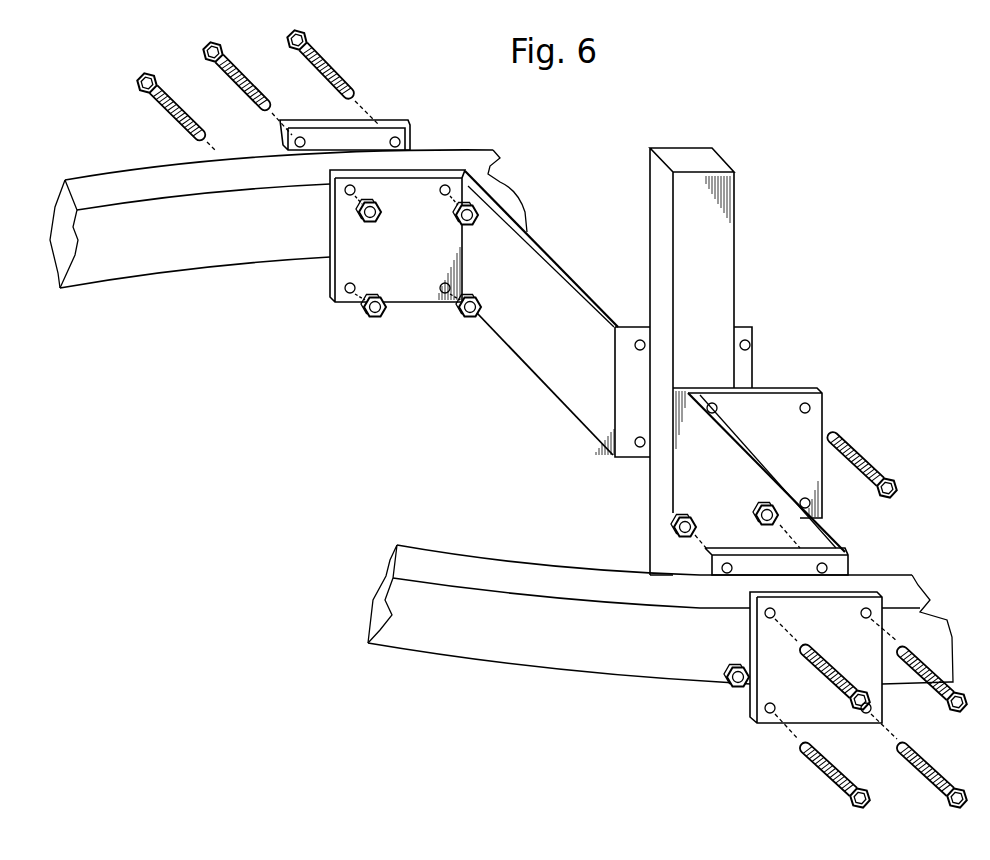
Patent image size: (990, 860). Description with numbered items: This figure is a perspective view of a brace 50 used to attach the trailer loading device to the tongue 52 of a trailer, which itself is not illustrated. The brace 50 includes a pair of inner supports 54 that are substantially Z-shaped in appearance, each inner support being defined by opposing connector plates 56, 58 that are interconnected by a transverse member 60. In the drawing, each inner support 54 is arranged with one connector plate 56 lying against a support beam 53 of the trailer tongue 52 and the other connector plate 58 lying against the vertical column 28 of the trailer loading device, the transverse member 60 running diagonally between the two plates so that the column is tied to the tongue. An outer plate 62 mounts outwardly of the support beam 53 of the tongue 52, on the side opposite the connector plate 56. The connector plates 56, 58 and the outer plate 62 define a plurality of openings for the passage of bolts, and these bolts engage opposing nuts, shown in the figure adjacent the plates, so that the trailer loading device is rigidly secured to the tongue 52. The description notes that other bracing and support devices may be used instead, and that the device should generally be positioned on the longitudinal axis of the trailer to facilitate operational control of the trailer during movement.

The vertical column 28 is at (708, 242).
The brace 50 is at (605, 372).
The tongue 52 is at (214, 300).
The support beam 53 is at (89, 262).
The inner supports 54 is at (470, 343).
The connector plate 56 is at (703, 568).
The connector plate 58 is at (614, 455).
The transverse member 60 is at (528, 345).
The outer plate 62 is at (386, 120).